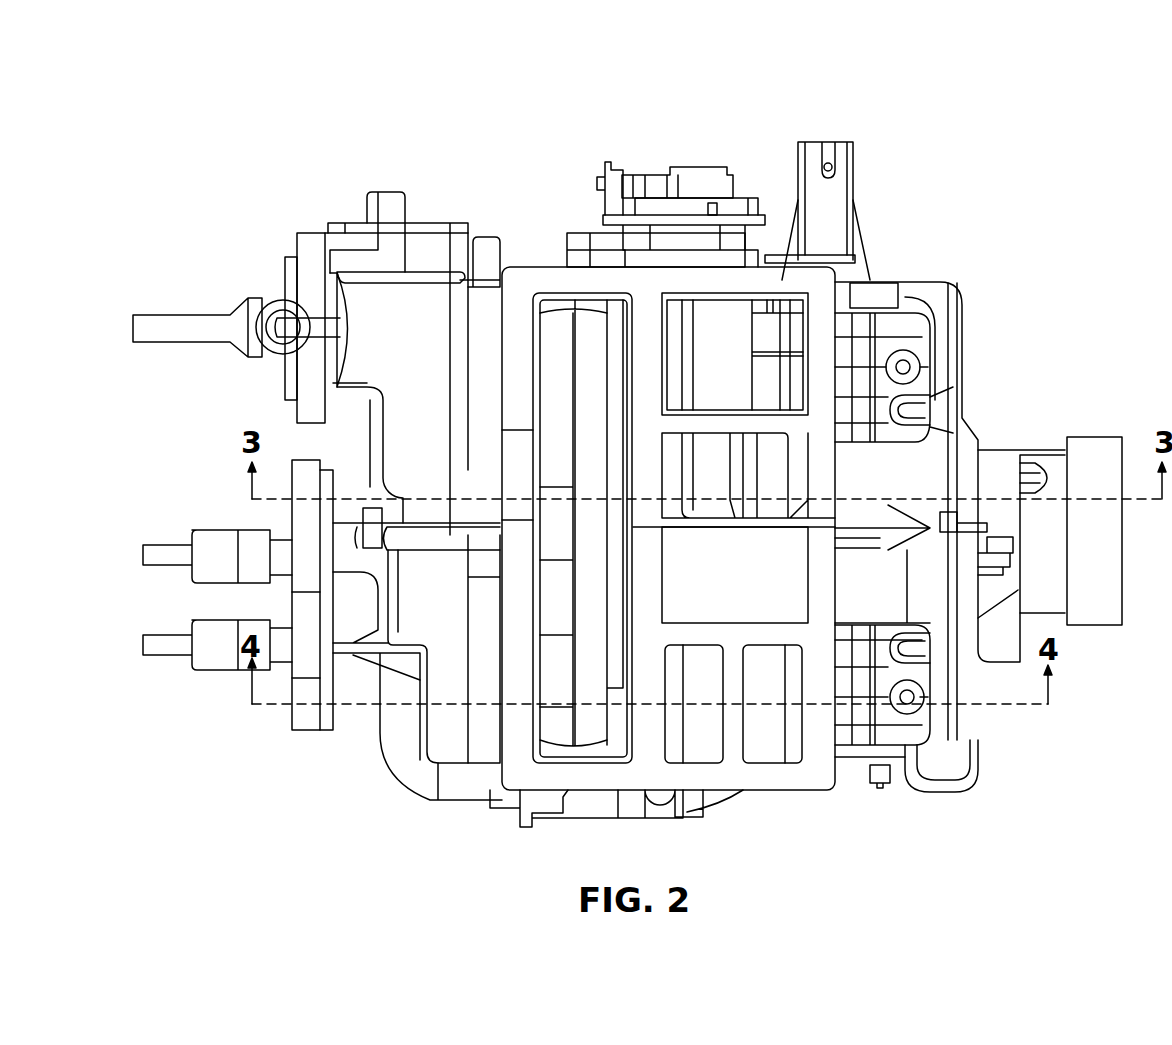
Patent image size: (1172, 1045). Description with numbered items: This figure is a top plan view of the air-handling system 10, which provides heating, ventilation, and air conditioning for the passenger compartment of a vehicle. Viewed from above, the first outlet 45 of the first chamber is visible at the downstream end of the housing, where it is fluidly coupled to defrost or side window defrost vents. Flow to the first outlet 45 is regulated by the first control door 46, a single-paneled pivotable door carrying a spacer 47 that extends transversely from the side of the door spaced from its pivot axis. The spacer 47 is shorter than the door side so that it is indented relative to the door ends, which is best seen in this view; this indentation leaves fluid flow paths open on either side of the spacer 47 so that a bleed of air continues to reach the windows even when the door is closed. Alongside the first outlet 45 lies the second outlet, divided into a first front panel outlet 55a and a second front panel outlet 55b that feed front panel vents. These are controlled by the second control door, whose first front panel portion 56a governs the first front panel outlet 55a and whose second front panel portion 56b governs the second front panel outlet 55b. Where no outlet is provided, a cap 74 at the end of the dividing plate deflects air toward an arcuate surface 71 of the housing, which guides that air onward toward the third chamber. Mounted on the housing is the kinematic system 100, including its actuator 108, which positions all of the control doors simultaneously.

The air-handling system 10 is at (330, 145).
The kinematic system 100 is at (625, 149).
The actuator 108 is at (723, 162).
The spacer 47 is at (617, 388).
The first control door 46 is at (627, 325).
The first outlet 45 is at (590, 365).
The first front panel outlet 55a is at (800, 335).
The first front panel portion 56a is at (732, 328).
The second front panel outlet 55b is at (803, 455).
The second front panel portion 56b is at (805, 478).
The arcuate surface 71 is at (769, 748).
The cap 74 is at (767, 600).